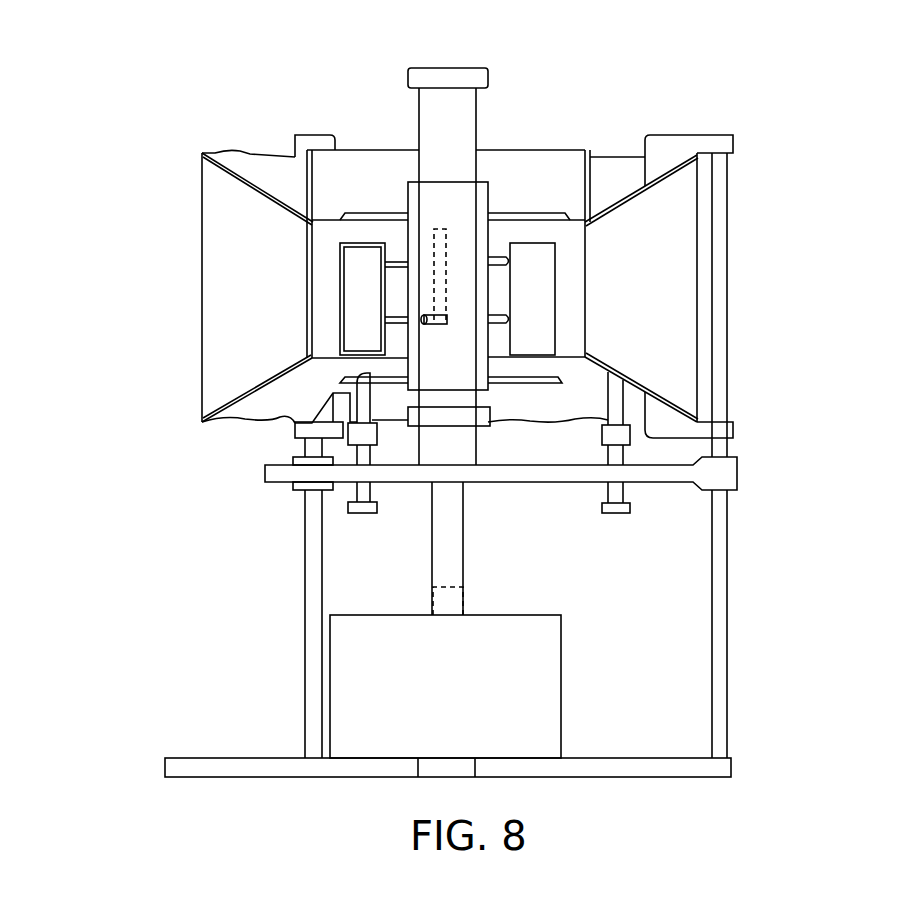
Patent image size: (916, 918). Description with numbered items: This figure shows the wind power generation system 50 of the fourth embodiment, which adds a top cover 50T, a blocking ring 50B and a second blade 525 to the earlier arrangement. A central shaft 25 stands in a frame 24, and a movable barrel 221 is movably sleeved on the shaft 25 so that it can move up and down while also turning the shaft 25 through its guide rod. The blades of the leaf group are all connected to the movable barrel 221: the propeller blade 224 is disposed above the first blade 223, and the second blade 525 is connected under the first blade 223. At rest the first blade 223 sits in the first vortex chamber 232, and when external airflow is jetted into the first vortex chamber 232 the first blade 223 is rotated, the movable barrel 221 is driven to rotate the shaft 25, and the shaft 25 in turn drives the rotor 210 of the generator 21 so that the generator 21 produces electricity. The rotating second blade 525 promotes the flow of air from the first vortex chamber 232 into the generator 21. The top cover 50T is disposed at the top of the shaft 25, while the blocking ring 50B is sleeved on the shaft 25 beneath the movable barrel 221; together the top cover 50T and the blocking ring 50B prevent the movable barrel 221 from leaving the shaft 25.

The top cover 50T is at (486, 68).
The shaft 25 is at (460, 113).
The movable barrel 221 is at (407, 203).
The propeller blade 224 is at (528, 213).
The first blade 223 is at (340, 293).
The first vortex chamber 232 is at (565, 235).
The second blade 525 is at (340, 380).
The blocking ring 50B is at (465, 428).
The frame 24 is at (720, 572).
The rotor 210 is at (463, 600).
The generator 21 is at (545, 688).
The wind power generation system 50 is at (907, 759).